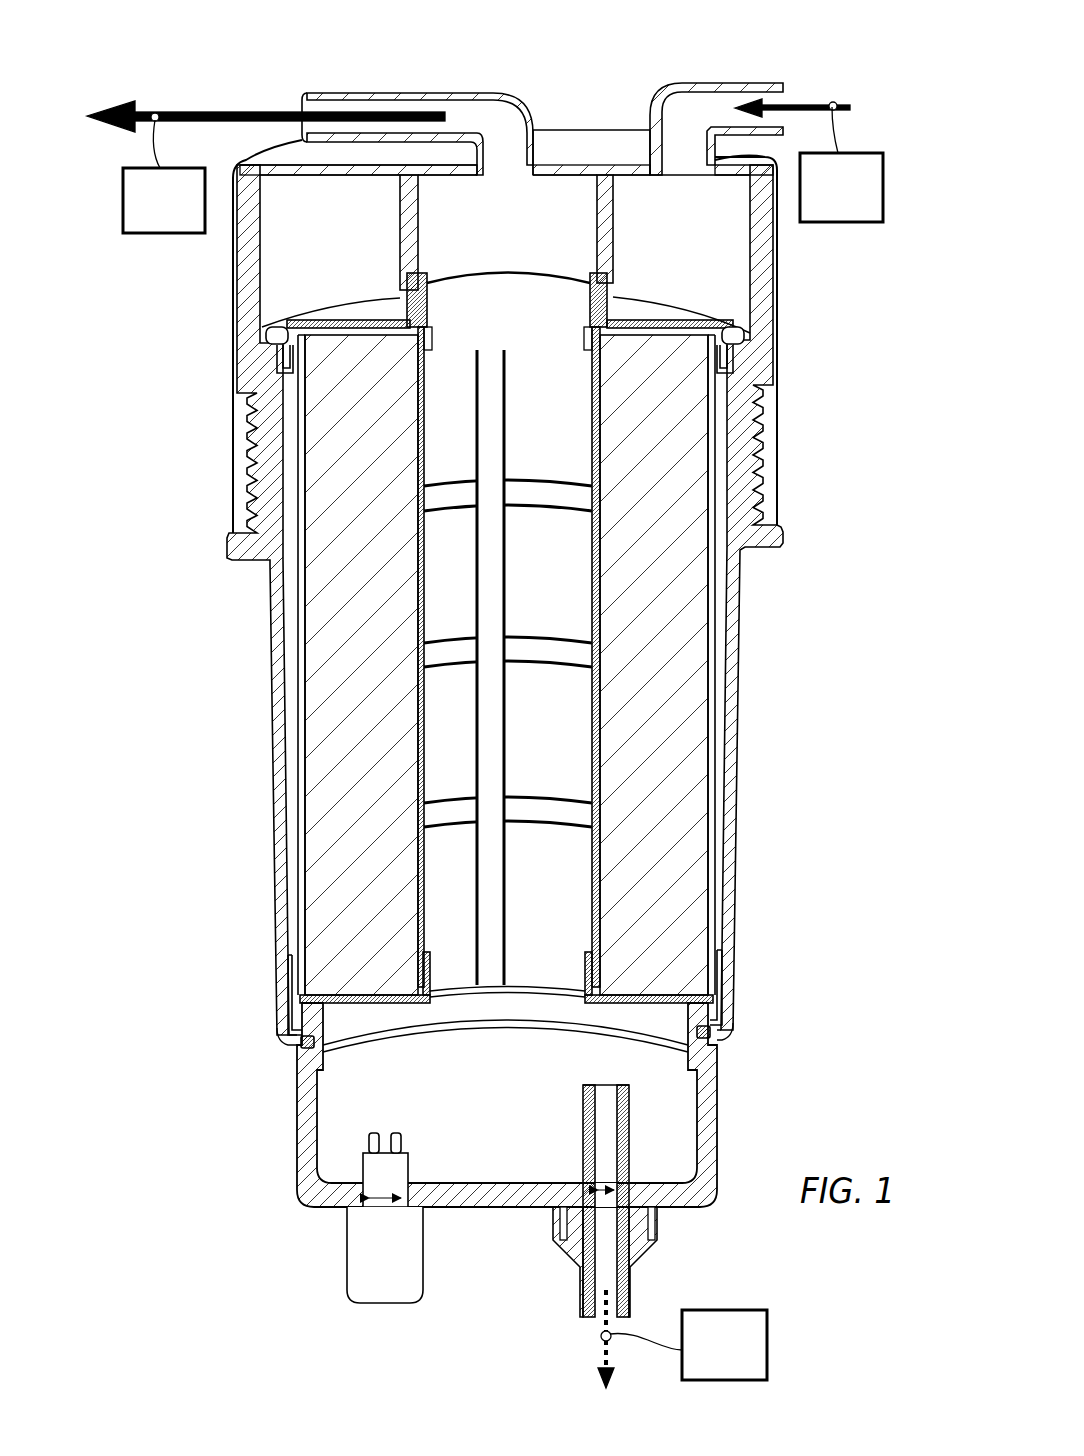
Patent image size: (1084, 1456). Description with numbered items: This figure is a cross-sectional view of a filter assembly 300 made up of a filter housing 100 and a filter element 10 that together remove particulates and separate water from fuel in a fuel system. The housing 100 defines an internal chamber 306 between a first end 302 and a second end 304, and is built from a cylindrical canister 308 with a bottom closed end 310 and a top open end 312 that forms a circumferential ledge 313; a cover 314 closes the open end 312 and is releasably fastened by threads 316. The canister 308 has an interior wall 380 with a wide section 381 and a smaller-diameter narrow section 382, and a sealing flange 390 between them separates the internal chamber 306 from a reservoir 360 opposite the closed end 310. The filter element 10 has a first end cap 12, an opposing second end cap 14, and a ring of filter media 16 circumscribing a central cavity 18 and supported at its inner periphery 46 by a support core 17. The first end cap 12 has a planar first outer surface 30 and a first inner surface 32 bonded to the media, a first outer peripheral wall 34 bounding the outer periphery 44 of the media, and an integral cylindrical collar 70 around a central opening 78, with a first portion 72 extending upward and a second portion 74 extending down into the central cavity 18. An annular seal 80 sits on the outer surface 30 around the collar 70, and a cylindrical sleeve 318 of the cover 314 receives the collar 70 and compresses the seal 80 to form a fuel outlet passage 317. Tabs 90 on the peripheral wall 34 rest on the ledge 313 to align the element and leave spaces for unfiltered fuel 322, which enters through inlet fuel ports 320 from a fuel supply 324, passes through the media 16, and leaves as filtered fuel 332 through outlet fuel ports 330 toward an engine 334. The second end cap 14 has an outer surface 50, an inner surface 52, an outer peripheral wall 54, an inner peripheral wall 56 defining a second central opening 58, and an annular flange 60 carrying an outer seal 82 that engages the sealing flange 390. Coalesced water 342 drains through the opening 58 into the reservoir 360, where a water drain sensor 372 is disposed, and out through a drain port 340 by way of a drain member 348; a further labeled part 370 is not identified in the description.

The filter assembly 300 is at (162, 64).
The filter housing 100 is at (236, 154).
The filter element 10 is at (672, 264).
The first end cap 12 is at (703, 292).
The second end cap 14 is at (669, 1003).
The filter media 16 is at (316, 832).
The support core 17 is at (548, 492).
The central cavity 18 is at (426, 573).
The first outer surface 30 is at (640, 312).
The first inner surface 32 is at (742, 365).
The first outer peripheral wall 34 is at (283, 368).
The outer periphery 44 is at (300, 610).
The inner periphery 46 is at (415, 690).
The outer surface 50 is at (718, 1010).
The inner surface 52 is at (660, 998).
The outer peripheral wall 54 is at (292, 984).
The inner peripheral wall 56 is at (427, 972).
The second central opening 58 is at (495, 994).
The annular flange 60 is at (322, 1072).
The cylindrical collar 70 is at (517, 260).
The first portion 72 is at (432, 288).
The second portion 74 is at (428, 347).
The central opening 78 is at (582, 307).
The annular seal 80 is at (405, 308).
The outer seal 82 is at (300, 1046).
The tabs 90 is at (279, 326).
The first end 302 is at (568, 129).
The second end 304 is at (507, 1163).
The internal chamber 306 is at (288, 763).
The cylindrical canister 308 is at (740, 680).
The closed end 310 is at (527, 1212).
The open end 312 is at (740, 320).
The circumferential ledge 313 is at (688, 338).
The cover 314 is at (250, 282).
The threads 316 is at (772, 455).
The fuel outlet passage 317 is at (548, 183).
The cylindrical sleeve 318 is at (597, 198).
The inlet fuel ports 320 is at (683, 162).
The unfiltered fuel 322 is at (808, 105).
The fuel supply 324 is at (870, 222).
The outlet fuel ports 330 is at (500, 97).
The filtered fuel 332 is at (312, 103).
The engine 334 is at (133, 233).
The drain port 340 is at (622, 1200).
The water 342 is at (602, 1337).
The drain member 348 is at (573, 1105).
The reservoir 360 is at (330, 1160).
The water sensor 370 is at (384, 1206).
The water drain sensor 372 is at (345, 1252).
The interior wall 380 is at (197, 797).
The wide section 381 is at (292, 797).
The narrow section 382 is at (337, 1147).
The sealing flange 390 is at (712, 1040).